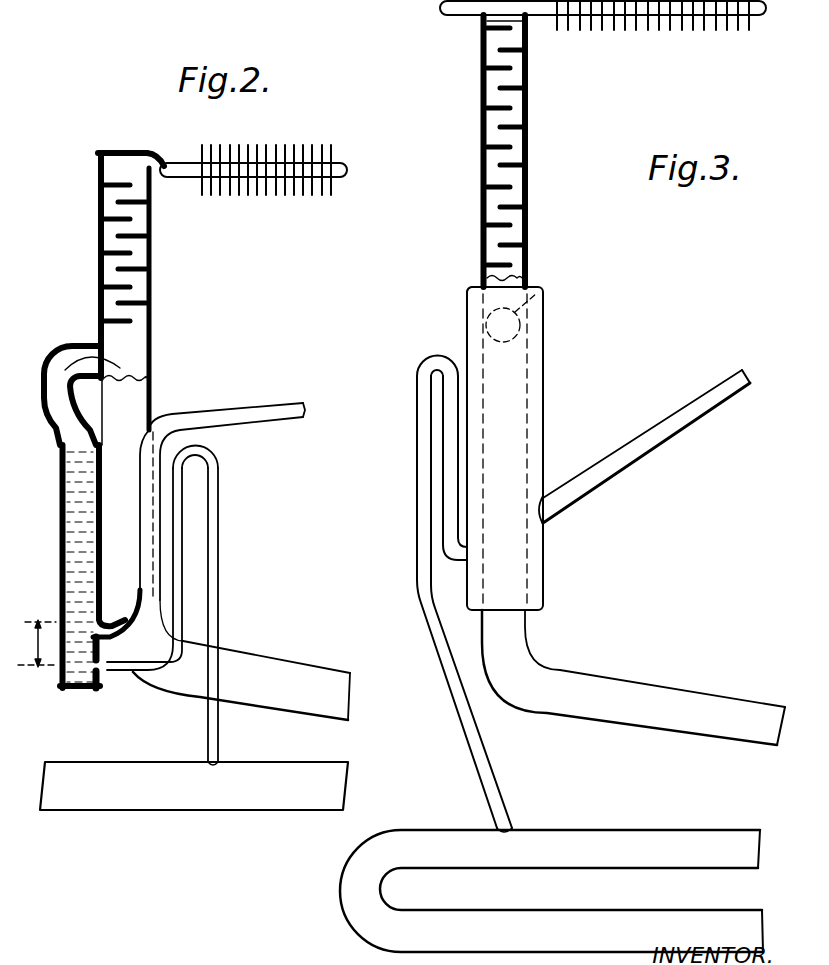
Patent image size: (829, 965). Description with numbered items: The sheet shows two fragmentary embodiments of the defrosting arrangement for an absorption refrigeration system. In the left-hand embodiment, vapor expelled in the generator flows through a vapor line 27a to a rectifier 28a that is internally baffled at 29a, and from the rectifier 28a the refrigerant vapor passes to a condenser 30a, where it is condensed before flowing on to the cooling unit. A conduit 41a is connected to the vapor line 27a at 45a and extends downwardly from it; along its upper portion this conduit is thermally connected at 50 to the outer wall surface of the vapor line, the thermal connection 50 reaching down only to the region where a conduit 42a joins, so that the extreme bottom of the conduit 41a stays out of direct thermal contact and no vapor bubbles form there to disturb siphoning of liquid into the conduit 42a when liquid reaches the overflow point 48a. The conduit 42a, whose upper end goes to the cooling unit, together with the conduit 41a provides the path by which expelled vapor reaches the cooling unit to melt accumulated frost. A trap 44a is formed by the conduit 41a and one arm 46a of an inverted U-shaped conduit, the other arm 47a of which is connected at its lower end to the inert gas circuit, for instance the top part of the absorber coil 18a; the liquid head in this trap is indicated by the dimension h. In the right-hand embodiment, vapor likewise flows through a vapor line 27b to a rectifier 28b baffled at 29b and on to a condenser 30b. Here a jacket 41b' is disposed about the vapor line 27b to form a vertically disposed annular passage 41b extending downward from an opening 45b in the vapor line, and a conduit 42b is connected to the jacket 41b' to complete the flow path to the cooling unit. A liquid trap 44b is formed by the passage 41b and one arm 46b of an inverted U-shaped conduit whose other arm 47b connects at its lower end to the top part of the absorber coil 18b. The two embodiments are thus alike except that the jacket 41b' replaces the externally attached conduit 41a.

In FIG. 2, the rectifier 28a is at (98, 226).
In FIG. 2, the internal baffles 29a is at (135, 268).
In FIG. 2, the condenser 30a is at (265, 190).
In FIG. 2, the connection of conduit to vapor line 45a is at (99, 343).
In FIG. 2, the conduit 42a is at (282, 413).
In FIG. 2, the conduit 41a is at (60, 472).
In FIG. 2, the trap 44a is at (115, 512).
In FIG. 2, the thermal connection 50 is at (97, 538).
In FIG. 2, the overflow point 48a is at (205, 445).
In FIG. 2, the arm of inverted U-shaped conduit 46a is at (177, 532).
In FIG. 2, the other arm of inverted U-shaped conduit 47a is at (218, 577).
In FIG. 2, the vapor line 27a is at (287, 678).
In FIG. 2, the liquid head height h is at (37, 643).
In FIG. 2, the absorber coil 18a is at (102, 760).
In FIG. 3, the condenser 30b is at (688, 22).
In FIG. 3, the rectifier 28b is at (528, 78).
In FIG. 3, the internal baffles 29b is at (527, 118).
In FIG. 3, the opening 45b is at (545, 294).
In FIG. 3, the passage 41b is at (465, 324).
In FIG. 3, the jacket 41b' is at (442, 275).
In FIG. 3, the liquid trap 44b is at (460, 358).
In FIG. 3, the other arm of inverted U-shaped conduit 47b is at (420, 435).
In FIG. 3, the arm of inverted U-shaped conduit 46b is at (447, 470).
In FIG. 3, the conduit 42b is at (707, 390).
In FIG. 3, the vapor line 27b is at (650, 715).
In FIG. 3, the absorber coil 18b is at (440, 840).